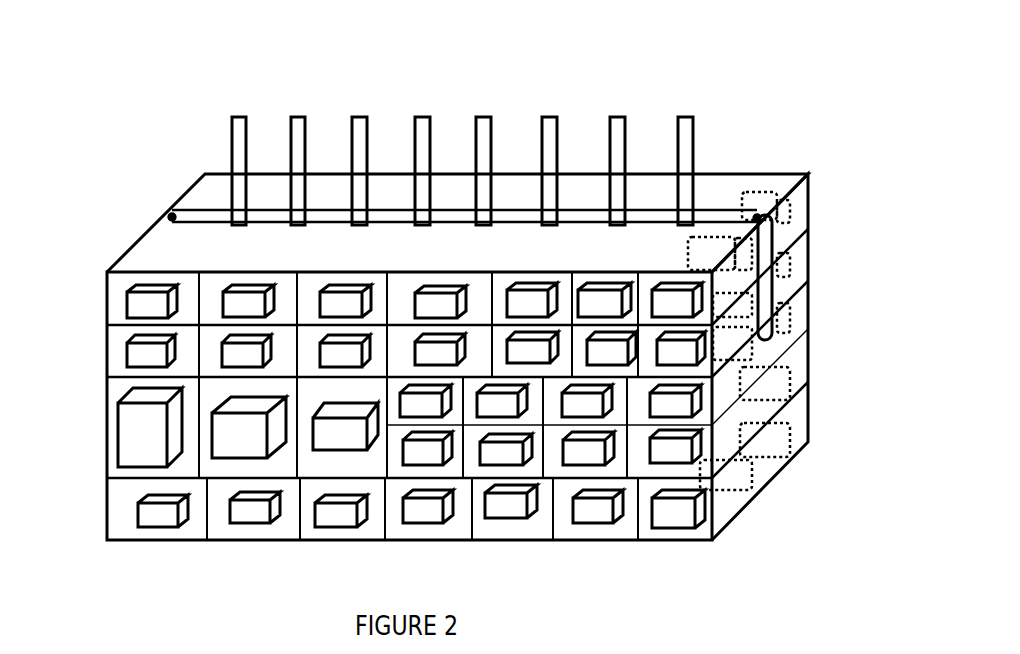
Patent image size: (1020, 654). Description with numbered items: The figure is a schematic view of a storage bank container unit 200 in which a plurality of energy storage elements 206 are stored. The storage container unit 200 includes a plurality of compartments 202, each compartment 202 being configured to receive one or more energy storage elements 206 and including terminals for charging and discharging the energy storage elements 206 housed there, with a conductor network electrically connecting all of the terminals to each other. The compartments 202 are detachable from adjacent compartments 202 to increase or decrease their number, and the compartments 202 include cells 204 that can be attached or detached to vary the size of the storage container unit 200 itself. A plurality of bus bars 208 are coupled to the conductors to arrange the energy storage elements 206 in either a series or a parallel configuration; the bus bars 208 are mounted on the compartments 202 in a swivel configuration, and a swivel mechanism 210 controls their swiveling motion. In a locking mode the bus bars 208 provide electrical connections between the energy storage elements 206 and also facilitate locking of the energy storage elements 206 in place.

The storage bank container unit 200 is at (670, 82).
The compartment 202 is at (810, 344).
The cell 204 is at (198, 326).
The energy storage element 206 is at (159, 515).
The bus bar 208 is at (696, 155).
The swivel mechanism 210 is at (760, 257).